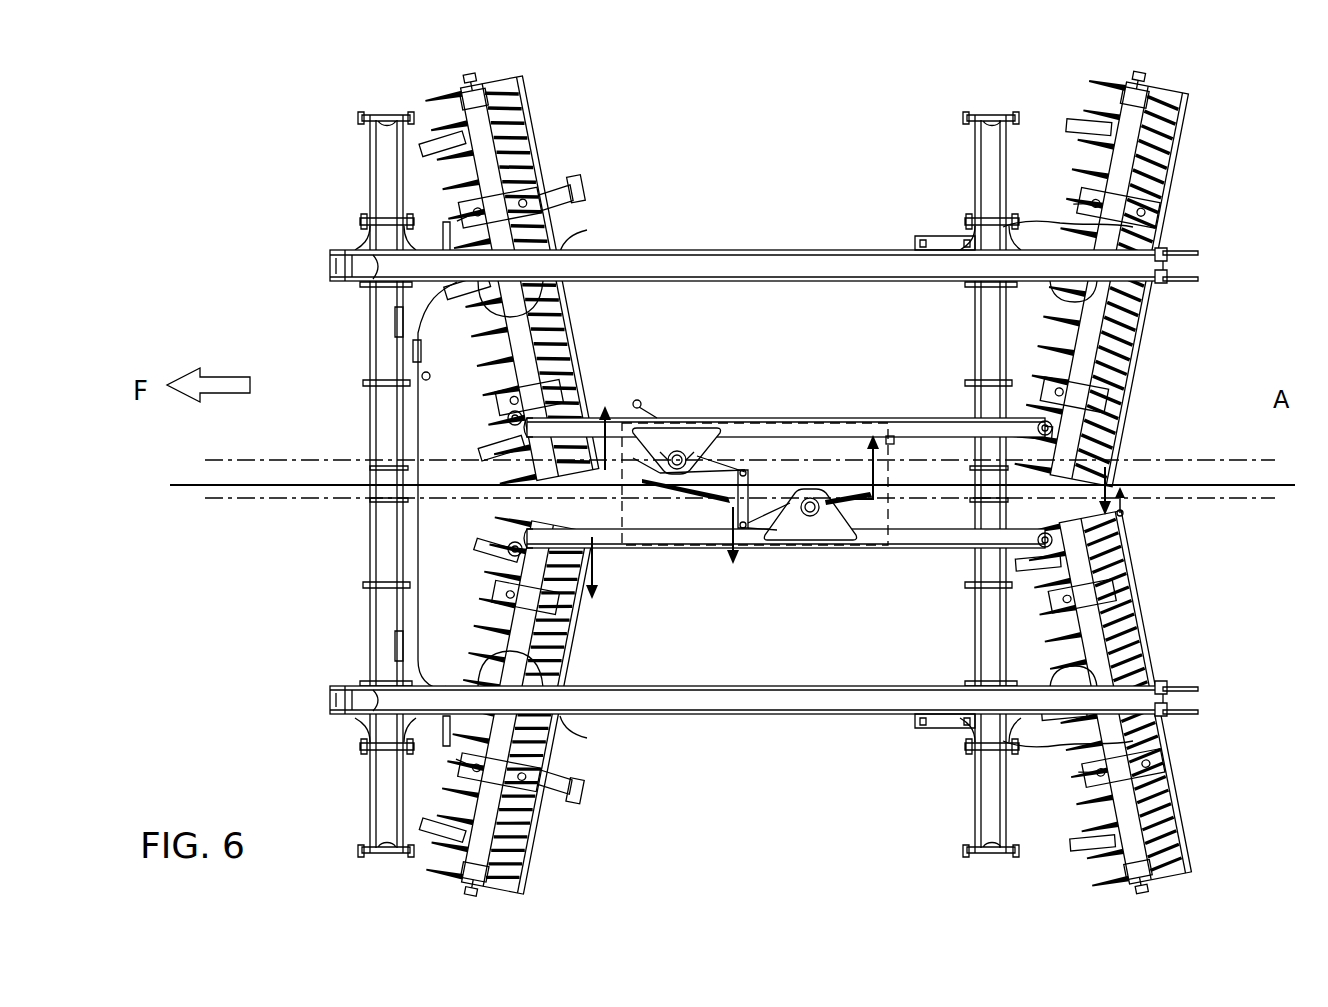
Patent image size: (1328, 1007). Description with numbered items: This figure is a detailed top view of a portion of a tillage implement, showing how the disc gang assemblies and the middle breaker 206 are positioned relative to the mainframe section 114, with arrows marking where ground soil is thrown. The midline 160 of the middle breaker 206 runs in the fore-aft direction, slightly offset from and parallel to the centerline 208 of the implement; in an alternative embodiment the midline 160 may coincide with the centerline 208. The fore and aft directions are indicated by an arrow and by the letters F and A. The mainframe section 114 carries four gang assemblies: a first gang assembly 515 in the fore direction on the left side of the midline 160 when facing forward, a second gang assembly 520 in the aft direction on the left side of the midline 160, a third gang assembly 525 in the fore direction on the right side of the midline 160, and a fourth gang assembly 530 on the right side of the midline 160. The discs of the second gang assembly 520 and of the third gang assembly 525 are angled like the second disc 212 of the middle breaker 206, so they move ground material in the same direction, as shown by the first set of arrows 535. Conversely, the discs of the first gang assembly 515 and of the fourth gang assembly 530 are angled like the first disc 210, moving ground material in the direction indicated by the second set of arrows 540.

The mainframe section 114 is at (198, 69).
The midline 160 is at (1257, 500).
The middle breaker 206 is at (775, 545).
The centerline 208 is at (1228, 455).
The first disc 210 is at (657, 490).
The second disc 212 is at (847, 493).
The first gang assembly 515 is at (533, 832).
The second gang assembly 520 is at (527, 130).
The third gang assembly 525 is at (1185, 790).
The fourth gang assembly 530 is at (1182, 168).
The first set of arrows 535 is at (639, 404).
The second set of arrows 540 is at (1098, 488).